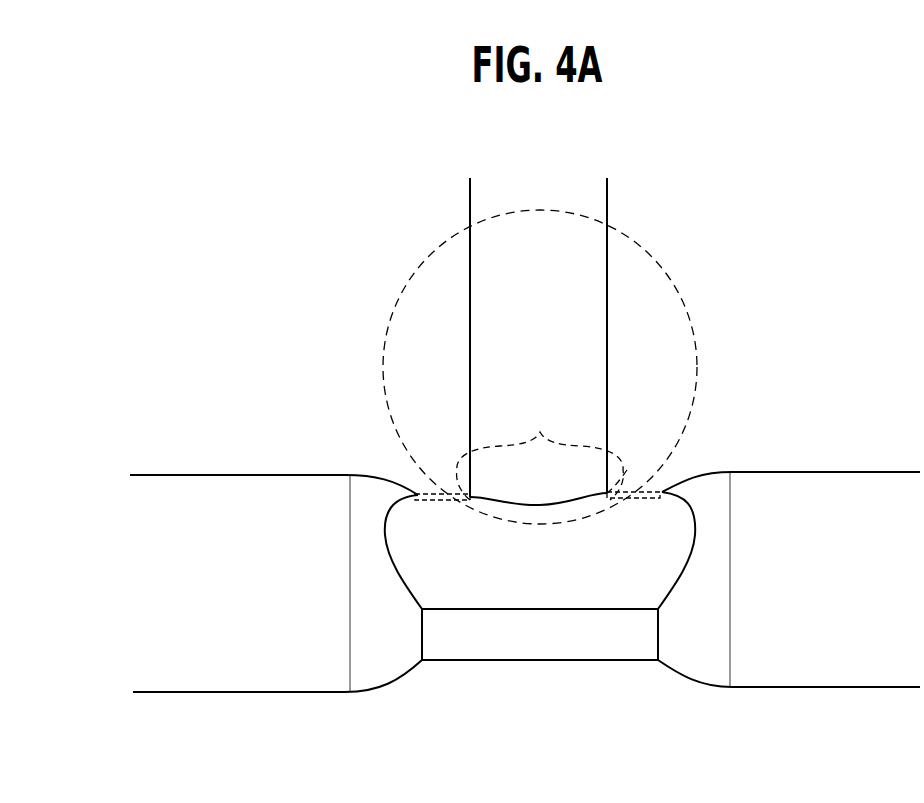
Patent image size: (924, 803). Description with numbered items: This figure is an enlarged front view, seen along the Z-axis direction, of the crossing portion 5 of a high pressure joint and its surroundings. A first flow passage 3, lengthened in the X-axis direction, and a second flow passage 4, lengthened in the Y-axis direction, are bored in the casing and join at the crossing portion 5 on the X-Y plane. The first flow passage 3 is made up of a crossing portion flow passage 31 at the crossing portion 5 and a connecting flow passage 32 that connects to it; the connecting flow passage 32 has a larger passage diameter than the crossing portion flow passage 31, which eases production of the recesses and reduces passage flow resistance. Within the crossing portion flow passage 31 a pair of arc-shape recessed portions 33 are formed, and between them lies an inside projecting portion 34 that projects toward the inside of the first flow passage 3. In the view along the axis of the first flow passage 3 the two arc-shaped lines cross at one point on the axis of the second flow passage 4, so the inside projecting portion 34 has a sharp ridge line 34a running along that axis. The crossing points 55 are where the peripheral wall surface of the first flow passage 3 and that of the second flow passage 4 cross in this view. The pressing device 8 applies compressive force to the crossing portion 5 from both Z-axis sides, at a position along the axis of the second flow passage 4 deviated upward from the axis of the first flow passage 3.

The first flow passage 3 is at (525, 561).
The second flow passage 4 is at (609, 321).
The crossing portion 5 is at (630, 466).
The pressing device 8 is at (423, 258).
The crossing portion flow passage 31 is at (573, 663).
The connecting flow passage 32 is at (258, 475).
The arc-shape recessed portion 33 is at (478, 583).
The inside projecting portion 34 is at (627, 507).
The sharp ridge line 34a is at (651, 503).
The crossing point 55 is at (540, 450).